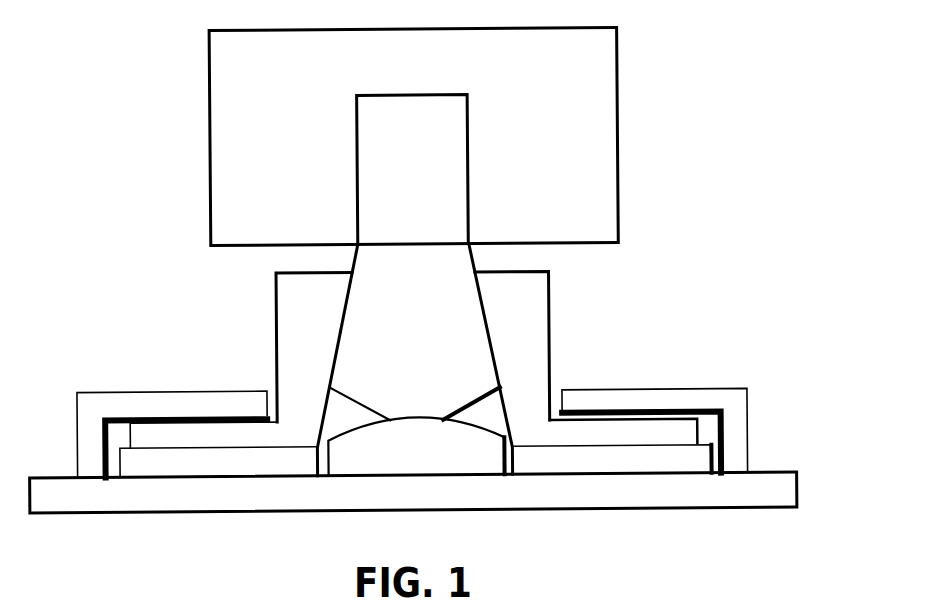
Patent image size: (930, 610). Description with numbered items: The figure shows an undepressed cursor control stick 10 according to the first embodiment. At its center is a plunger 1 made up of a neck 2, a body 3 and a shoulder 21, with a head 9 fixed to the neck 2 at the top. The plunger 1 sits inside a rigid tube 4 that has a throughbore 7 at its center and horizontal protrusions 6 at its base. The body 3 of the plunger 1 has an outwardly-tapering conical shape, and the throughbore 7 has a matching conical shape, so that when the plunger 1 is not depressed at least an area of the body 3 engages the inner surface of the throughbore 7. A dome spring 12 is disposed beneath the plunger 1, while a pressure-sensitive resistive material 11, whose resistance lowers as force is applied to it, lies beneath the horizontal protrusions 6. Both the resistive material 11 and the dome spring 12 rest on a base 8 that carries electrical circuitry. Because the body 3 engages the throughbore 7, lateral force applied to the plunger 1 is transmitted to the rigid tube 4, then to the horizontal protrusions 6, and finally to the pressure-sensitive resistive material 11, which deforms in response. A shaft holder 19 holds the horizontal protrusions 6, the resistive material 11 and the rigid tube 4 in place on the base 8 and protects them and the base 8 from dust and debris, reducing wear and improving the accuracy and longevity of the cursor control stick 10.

The cursor control stick 10 is at (134, 180).
The head 9 is at (618, 86).
The neck 2 is at (431, 143).
The plunger 1 is at (408, 262).
The shoulder 21 is at (465, 256).
The rigid tube 4 is at (550, 329).
The throughbore 7 is at (343, 352).
The body 3 is at (430, 396).
The dome spring 12 is at (491, 438).
The horizontal protrusions 6 is at (172, 433).
The shaft holder 19 is at (684, 390).
The pressure-sensitive resistive material 11 is at (711, 457).
The base 8 is at (193, 511).